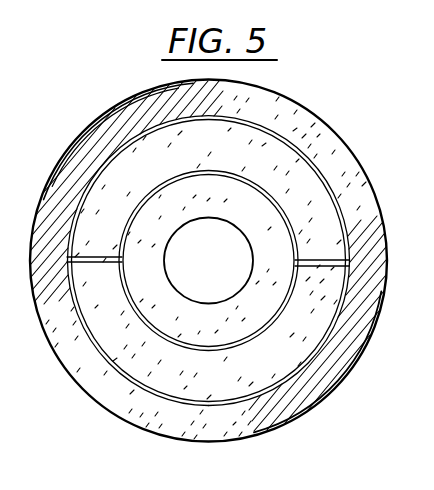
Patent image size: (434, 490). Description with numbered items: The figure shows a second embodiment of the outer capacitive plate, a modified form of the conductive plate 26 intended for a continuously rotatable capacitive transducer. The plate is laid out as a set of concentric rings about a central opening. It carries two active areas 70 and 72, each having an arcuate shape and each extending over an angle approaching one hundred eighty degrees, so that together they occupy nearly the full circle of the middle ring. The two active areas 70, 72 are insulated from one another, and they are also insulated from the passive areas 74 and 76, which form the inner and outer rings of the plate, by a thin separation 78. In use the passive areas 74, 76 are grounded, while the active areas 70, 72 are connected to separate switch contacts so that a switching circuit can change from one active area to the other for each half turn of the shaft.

The conductive plate 26 is at (152, 433).
The active area 70 is at (226, 157).
The active area 72 is at (222, 388).
The passive area 74 is at (222, 207).
The passive area 76 is at (320, 132).
The thin separation 78 is at (110, 368).